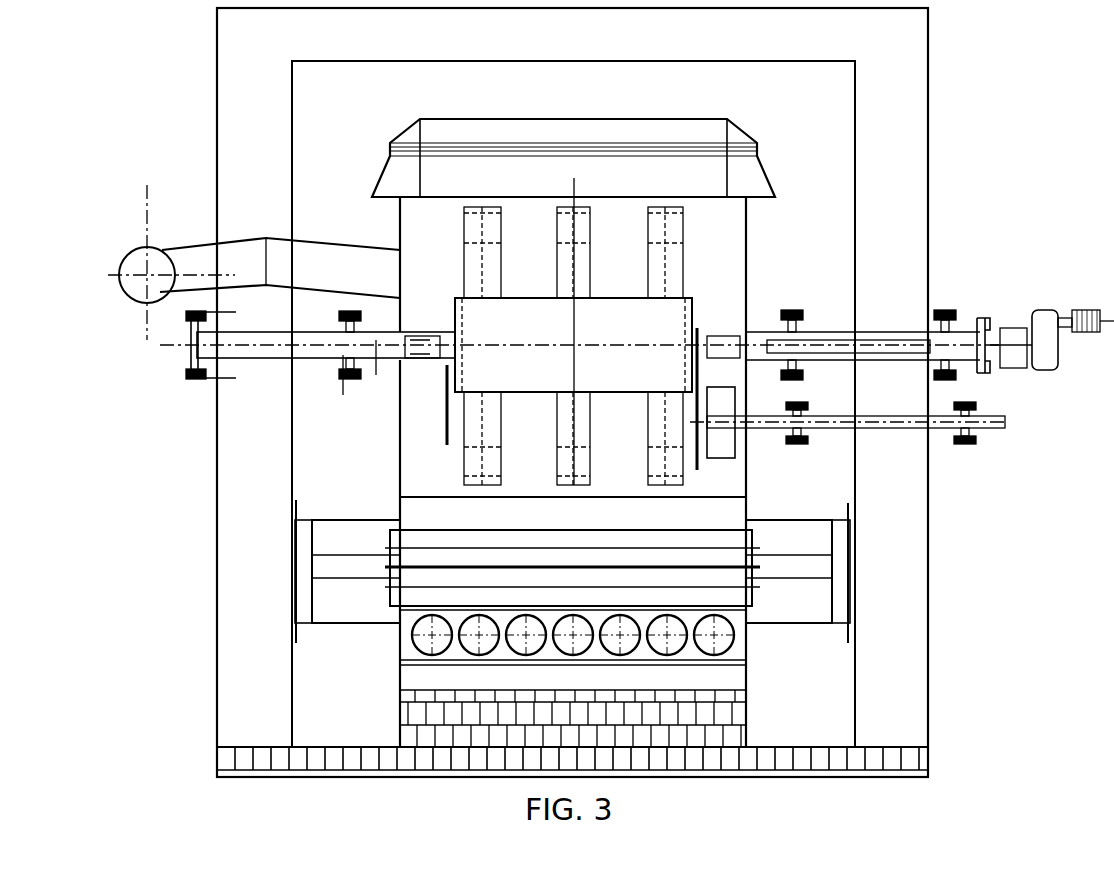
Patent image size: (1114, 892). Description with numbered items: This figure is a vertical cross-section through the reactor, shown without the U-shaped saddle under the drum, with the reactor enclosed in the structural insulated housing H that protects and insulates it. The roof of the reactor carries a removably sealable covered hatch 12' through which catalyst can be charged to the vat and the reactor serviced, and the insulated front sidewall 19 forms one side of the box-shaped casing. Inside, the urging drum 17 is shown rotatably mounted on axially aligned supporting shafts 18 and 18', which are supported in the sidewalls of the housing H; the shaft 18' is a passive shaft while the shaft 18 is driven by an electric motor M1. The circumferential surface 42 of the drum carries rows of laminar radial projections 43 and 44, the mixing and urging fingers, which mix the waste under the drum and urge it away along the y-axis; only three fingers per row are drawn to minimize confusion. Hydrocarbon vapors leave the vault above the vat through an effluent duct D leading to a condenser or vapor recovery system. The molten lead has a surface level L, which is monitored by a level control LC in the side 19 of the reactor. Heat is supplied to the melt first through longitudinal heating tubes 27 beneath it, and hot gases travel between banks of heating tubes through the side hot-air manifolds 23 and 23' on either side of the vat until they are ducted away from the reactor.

The insulated housing H is at (930, 62).
The covered hatches 12' is at (573, 135).
The front sidewall 19 is at (750, 250).
The radial projection 43 is at (688, 265).
The circumferential surface 42 is at (532, 394).
The radial projection 44 is at (646, 410).
The urging drum 17 is at (448, 300).
The passive shaft 18' is at (580, 361).
The driven shaft 18 is at (889, 333).
The electric motor M1 is at (1042, 309).
The level control LC is at (744, 458).
The effluent duct D is at (324, 252).
The melt level L is at (440, 498).
The side hot-air manifold 23' is at (347, 588).
The side hot-air manifold 23 is at (798, 590).
The longitudinal heating tubes 27 is at (588, 652).